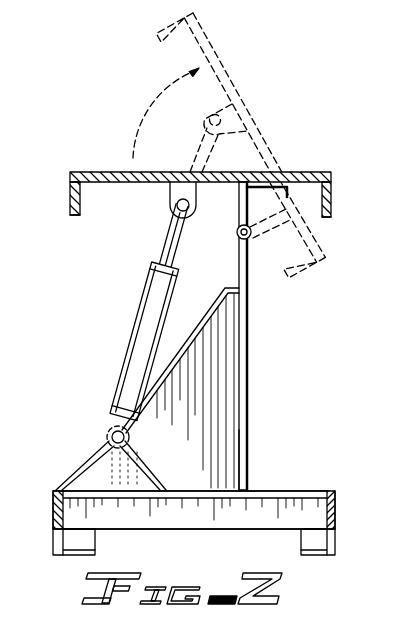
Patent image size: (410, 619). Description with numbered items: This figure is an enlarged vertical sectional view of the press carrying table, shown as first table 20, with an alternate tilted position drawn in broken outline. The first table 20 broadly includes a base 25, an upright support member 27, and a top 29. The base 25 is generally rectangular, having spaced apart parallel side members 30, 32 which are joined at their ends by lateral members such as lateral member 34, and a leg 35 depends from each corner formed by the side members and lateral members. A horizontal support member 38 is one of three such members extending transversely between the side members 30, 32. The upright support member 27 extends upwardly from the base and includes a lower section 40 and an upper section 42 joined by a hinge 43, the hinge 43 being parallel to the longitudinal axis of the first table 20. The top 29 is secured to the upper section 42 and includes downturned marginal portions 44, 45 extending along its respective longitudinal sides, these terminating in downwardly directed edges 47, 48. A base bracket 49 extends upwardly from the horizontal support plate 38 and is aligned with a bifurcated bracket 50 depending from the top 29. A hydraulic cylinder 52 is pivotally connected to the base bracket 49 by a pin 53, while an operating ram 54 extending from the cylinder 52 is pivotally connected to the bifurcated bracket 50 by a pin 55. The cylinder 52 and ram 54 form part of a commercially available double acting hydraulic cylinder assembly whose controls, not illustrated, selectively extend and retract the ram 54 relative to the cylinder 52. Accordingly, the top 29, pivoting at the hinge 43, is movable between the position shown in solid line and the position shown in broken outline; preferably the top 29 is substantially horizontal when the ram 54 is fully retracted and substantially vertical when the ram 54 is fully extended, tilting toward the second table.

The first table 20 is at (186, 336).
The base 25 is at (336, 495).
The upright support member 27 is at (249, 336).
The top 29 is at (228, 57).
The side member 30 is at (55, 491).
The side member 32 is at (336, 527).
The lateral member 34 is at (181, 530).
The leg 35 is at (82, 556).
The horizontal support member 38 is at (270, 490).
The lower section 40 is at (250, 442).
The upper section 42 is at (242, 225).
The hinge 43 is at (238, 237).
The downturned marginal portion 44 is at (331, 176).
The downturned marginal portion 45 is at (70, 193).
The downwardly directed edge 47 is at (327, 218).
The downwardly directed edge 48 is at (72, 216).
The base bracket 49 is at (146, 467).
The bifurcated bracket 50 is at (170, 190).
The hydraulic cylinder 52 is at (117, 390).
The pin 53 is at (128, 433).
The operating ram 54 is at (167, 236).
The pin 55 is at (197, 198).